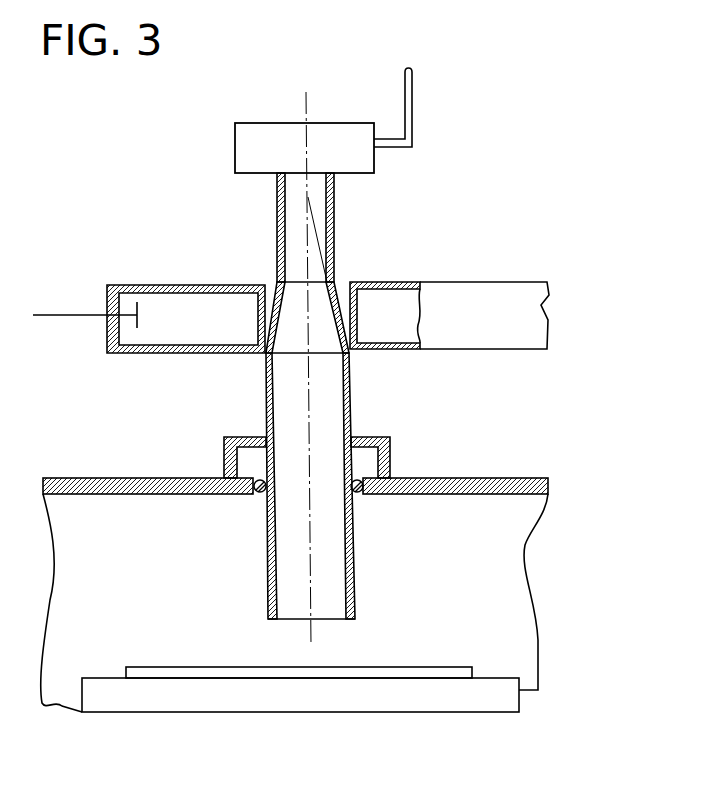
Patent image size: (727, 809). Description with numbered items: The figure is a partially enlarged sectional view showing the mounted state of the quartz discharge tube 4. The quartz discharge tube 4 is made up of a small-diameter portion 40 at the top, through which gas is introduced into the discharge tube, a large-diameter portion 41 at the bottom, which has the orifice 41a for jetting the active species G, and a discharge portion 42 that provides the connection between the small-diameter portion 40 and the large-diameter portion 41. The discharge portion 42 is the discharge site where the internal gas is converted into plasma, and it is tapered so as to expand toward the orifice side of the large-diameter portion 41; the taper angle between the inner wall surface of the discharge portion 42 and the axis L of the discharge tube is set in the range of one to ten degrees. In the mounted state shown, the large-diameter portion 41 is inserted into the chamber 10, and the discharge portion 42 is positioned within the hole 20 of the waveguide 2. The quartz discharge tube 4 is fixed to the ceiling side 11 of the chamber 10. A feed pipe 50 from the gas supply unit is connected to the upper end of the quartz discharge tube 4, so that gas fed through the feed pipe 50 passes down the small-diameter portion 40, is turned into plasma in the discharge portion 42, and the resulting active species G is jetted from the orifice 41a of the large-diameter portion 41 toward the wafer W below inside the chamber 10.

The waveguide 2 is at (503, 282).
The quartz discharge tube 4 is at (293, 364).
The chamber 10 is at (512, 543).
The ceiling side 11 is at (487, 477).
The hole 20 is at (265, 307).
The small-diameter portion 40 is at (333, 200).
The large-diameter portion 41 is at (352, 394).
The orifice 41a is at (326, 620).
The discharge portion 42 is at (352, 283).
The feed pipe 50 is at (413, 119).
The wafer W is at (472, 673).
The active species G is at (298, 655).
The axis L is at (308, 355).